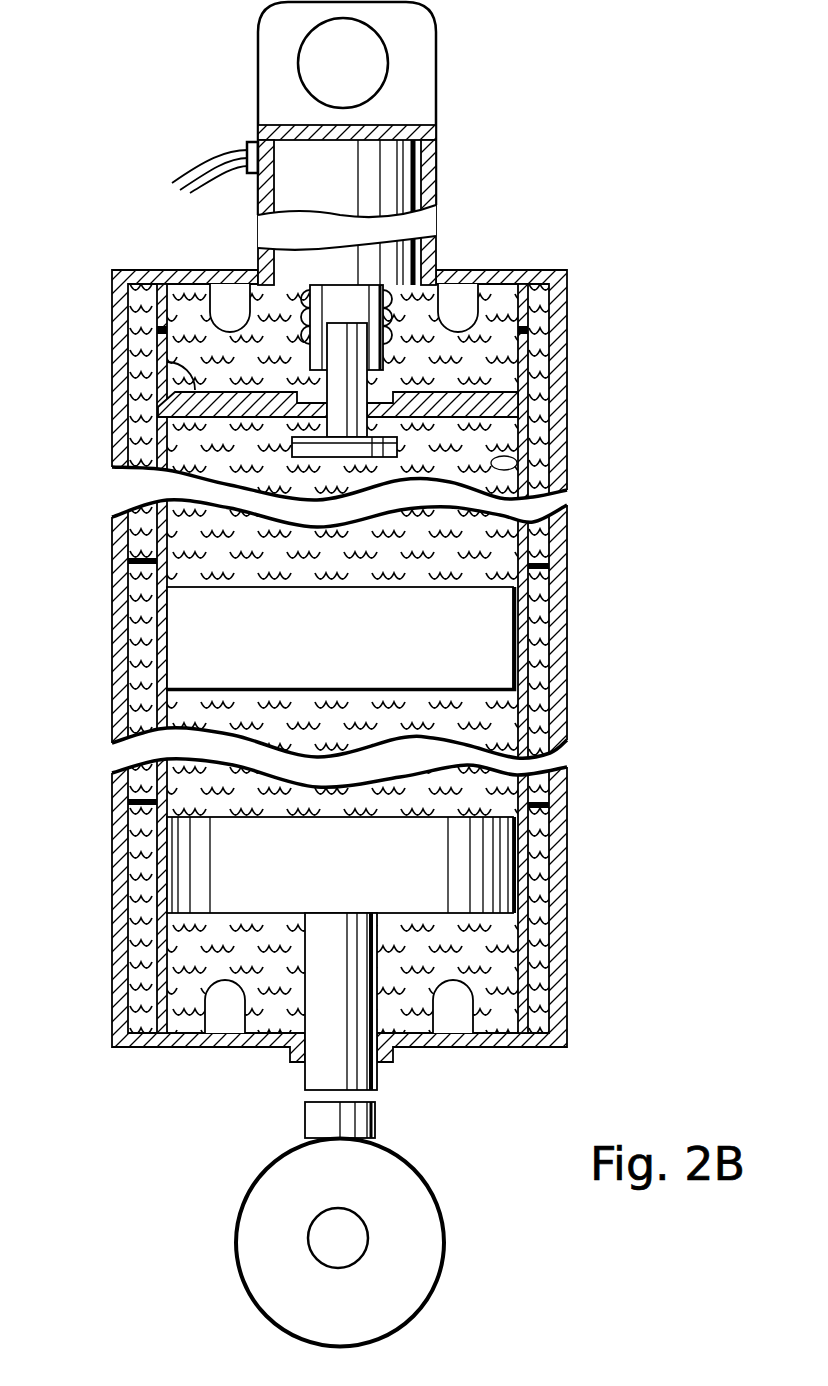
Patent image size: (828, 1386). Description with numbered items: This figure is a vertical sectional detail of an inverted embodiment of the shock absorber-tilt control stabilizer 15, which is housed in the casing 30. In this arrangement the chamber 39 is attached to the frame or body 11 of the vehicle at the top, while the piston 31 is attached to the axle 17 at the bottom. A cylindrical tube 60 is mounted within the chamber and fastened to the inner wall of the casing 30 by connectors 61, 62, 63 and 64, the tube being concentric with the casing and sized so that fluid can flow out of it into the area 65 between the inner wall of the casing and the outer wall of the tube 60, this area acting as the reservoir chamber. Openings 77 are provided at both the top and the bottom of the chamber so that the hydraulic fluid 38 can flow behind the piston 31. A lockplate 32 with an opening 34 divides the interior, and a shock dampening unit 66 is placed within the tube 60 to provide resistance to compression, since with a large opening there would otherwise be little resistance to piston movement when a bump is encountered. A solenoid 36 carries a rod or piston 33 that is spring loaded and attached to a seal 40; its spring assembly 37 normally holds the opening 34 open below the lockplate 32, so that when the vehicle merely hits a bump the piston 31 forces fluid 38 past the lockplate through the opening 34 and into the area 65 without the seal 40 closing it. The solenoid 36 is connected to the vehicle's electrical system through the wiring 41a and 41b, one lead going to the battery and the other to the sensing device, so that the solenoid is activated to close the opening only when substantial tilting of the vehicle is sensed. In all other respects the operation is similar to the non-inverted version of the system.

The shock absorber-tilt control stabilizer 15 is at (365, 674).
The frame or body 11 is at (432, 118).
The electrical wiring 41a is at (200, 155).
The electrical wiring 41b is at (205, 187).
The openings 77 is at (232, 280).
The casing 30 is at (112, 305).
The spring assembly 37 is at (288, 290).
The lockplate 32 is at (192, 387).
The solenoid 36 is at (315, 357).
The rod or piston 33 is at (348, 373).
The opening 34 is at (440, 388).
The hydraulic fluid 38 is at (233, 455).
The inner wall / chamber 39 is at (517, 459).
The seal 40 is at (346, 457).
The connector 61 is at (140, 553).
The connector 63 is at (549, 540).
The area 65 is at (140, 662).
The shock dampening unit 66 is at (467, 642).
The tube 60 is at (567, 703).
The connector 62 is at (142, 805).
The connector 64 is at (549, 808).
The piston 31 is at (245, 875).
The axle 17 is at (430, 1272).